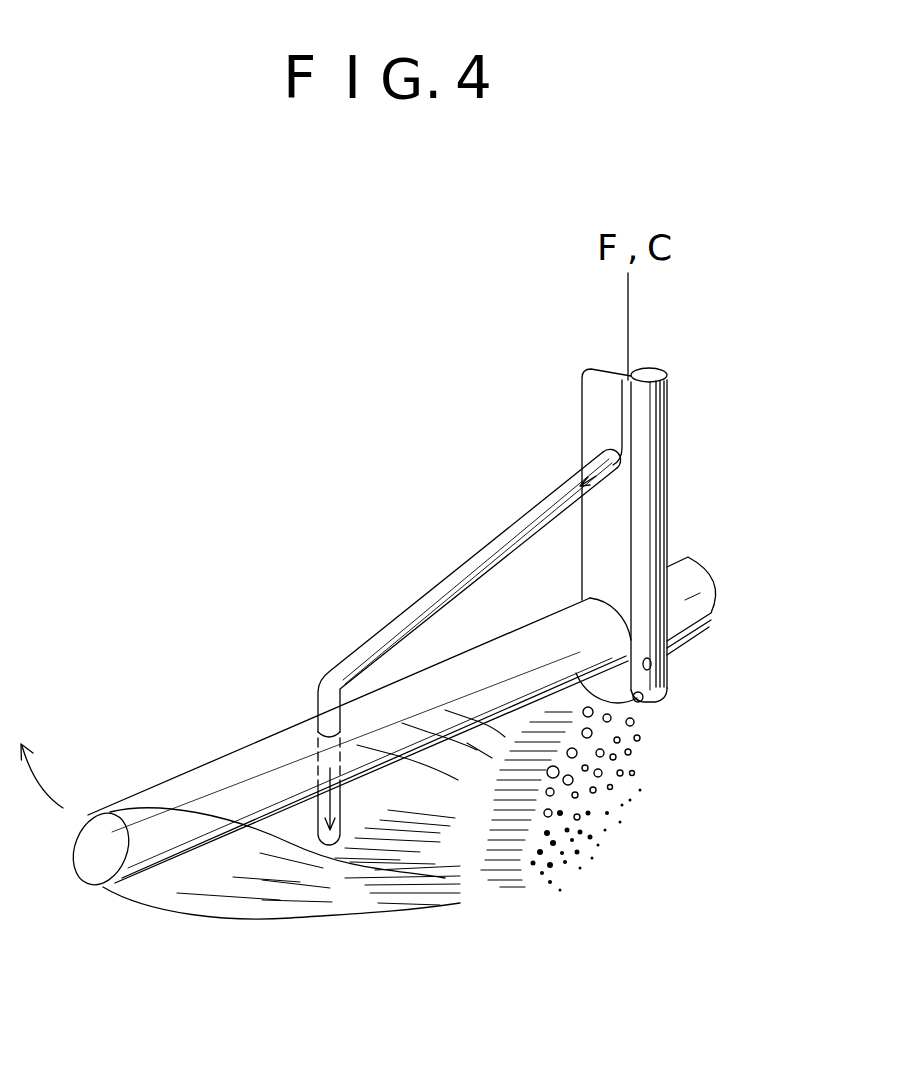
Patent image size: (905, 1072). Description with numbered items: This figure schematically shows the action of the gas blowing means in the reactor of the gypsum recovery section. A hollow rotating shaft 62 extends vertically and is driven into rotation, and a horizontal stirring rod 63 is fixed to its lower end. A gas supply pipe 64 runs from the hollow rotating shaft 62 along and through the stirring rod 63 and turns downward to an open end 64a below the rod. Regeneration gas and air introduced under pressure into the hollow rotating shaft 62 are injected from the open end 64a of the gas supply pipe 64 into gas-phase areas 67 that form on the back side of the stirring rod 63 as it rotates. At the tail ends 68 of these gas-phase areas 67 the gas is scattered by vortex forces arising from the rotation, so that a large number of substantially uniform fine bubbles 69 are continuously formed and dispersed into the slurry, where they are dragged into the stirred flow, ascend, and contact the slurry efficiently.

The hollow rotating shaft 62 is at (656, 497).
The stirring rod 63 is at (90, 855).
The gas supply pipe 64 is at (397, 617).
The open end 64a is at (332, 844).
The gas-phase area 67 is at (240, 918).
The tail end 68 is at (513, 843).
The fine bubbles 69 is at (575, 795).